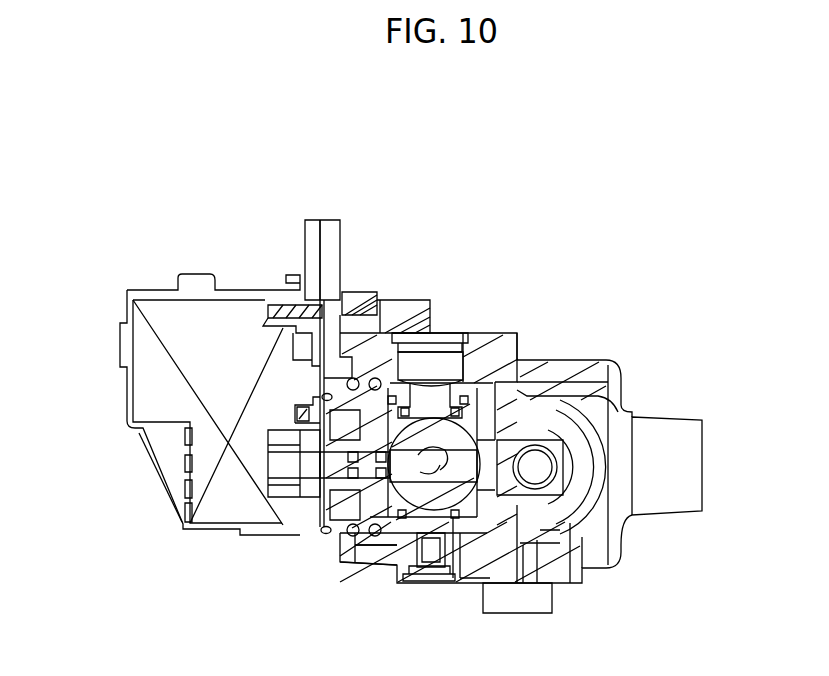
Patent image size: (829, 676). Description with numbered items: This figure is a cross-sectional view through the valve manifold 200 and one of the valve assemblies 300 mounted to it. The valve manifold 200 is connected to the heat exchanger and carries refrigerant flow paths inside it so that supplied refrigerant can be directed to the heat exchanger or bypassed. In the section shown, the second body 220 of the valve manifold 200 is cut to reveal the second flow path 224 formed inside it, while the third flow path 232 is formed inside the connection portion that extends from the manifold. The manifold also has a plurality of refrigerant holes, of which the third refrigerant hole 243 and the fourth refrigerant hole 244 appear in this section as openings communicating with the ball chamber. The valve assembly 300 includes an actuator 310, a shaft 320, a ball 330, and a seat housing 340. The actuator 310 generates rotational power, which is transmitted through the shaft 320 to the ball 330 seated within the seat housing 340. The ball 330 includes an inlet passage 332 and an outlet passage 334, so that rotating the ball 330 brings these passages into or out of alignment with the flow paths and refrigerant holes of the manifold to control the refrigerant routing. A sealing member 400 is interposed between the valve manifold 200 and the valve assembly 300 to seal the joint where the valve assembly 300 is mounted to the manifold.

The valve manifold 200 is at (530, 278).
The second body 220 is at (395, 552).
The second flow path 224 is at (455, 368).
The third flow path 232 is at (543, 465).
The third refrigerant hole 243 is at (413, 581).
The fourth refrigerant hole 244 is at (416, 340).
The valve assembly 300 is at (137, 272).
The actuator 310 is at (233, 310).
The shaft 320 is at (280, 467).
The ball 330 is at (376, 535).
The inlet passage 332 is at (510, 483).
The outlet passage 334 is at (414, 490).
The seat housing 340 is at (479, 453).
The sealing member 400 is at (352, 376).